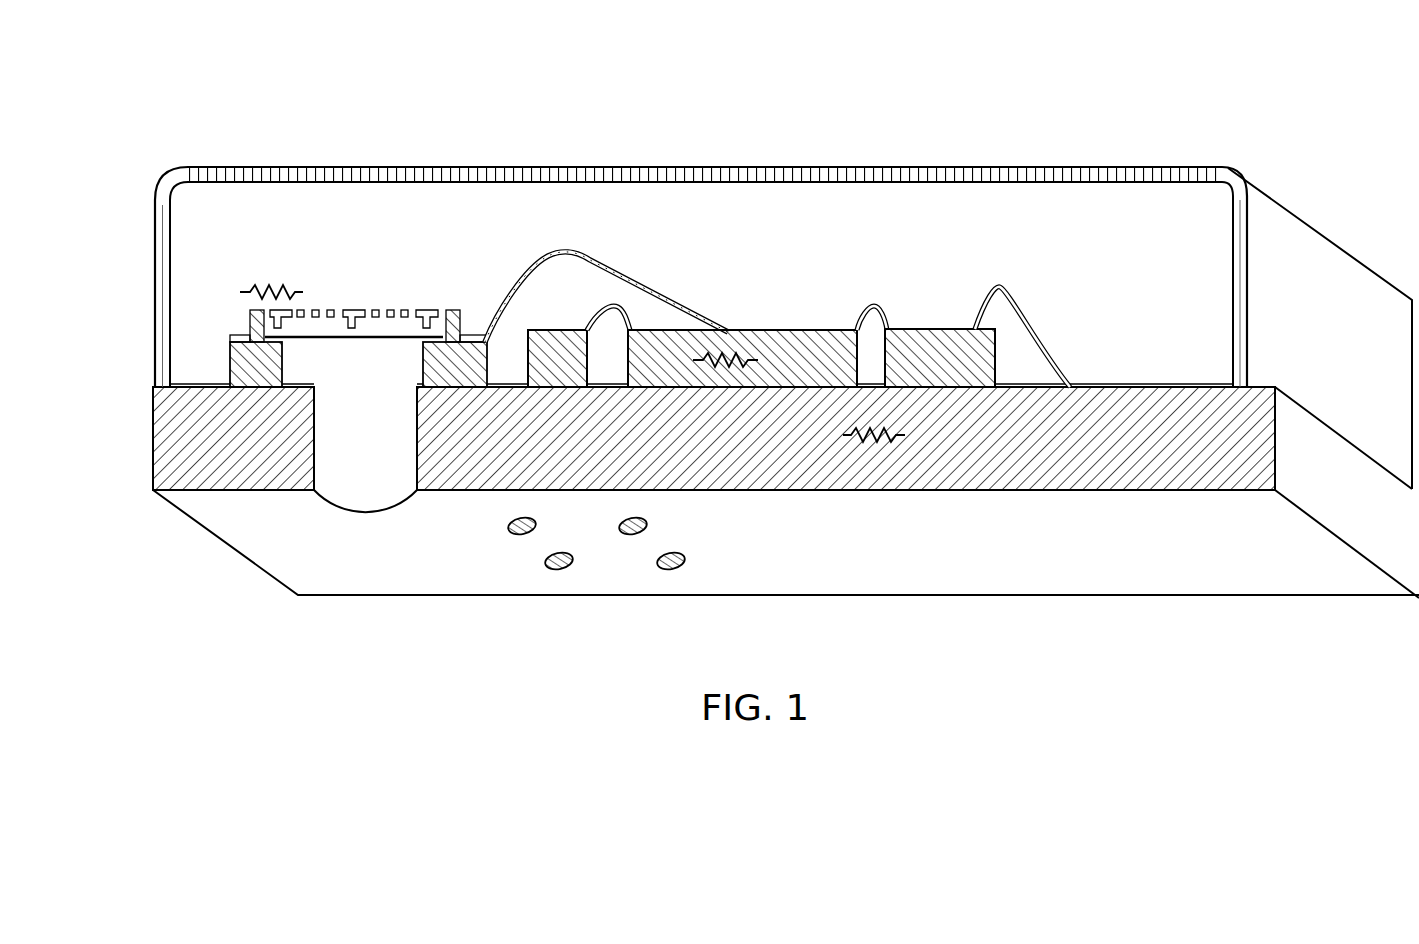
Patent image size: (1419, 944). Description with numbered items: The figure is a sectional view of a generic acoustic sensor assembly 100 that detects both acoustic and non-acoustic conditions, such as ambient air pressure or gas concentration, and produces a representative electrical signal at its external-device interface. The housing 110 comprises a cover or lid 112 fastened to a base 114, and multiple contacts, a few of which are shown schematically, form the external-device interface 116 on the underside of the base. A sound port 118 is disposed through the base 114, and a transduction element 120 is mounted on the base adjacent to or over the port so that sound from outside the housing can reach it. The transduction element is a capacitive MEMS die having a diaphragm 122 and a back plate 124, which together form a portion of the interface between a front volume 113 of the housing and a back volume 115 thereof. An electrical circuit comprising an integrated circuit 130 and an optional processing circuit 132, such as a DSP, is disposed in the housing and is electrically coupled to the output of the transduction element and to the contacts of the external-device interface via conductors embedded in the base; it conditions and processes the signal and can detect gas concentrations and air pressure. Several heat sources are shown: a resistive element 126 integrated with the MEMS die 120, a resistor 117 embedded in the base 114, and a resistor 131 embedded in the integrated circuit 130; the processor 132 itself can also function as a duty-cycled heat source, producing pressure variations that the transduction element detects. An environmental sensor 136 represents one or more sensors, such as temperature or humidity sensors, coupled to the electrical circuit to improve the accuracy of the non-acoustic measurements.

The acoustic sensor assembly 100 is at (128, 110).
The housing 110 is at (701, 243).
The lid 112 is at (303, 167).
The front volume 113 is at (323, 365).
The base 114 is at (152, 436).
The back volume 115 is at (597, 230).
The external-device interface 116 is at (600, 558).
The resistor 117 is at (868, 441).
The sound port 118 is at (366, 513).
The transduction element 120 is at (331, 281).
The diaphragm 122 is at (352, 339).
The back plate 124 is at (388, 310).
The resistive element 126 is at (272, 290).
The integrated circuit 130 is at (757, 397).
The resistor 131 is at (730, 365).
The processing circuit 132 is at (939, 319).
The environmental sensor 136 is at (573, 320).